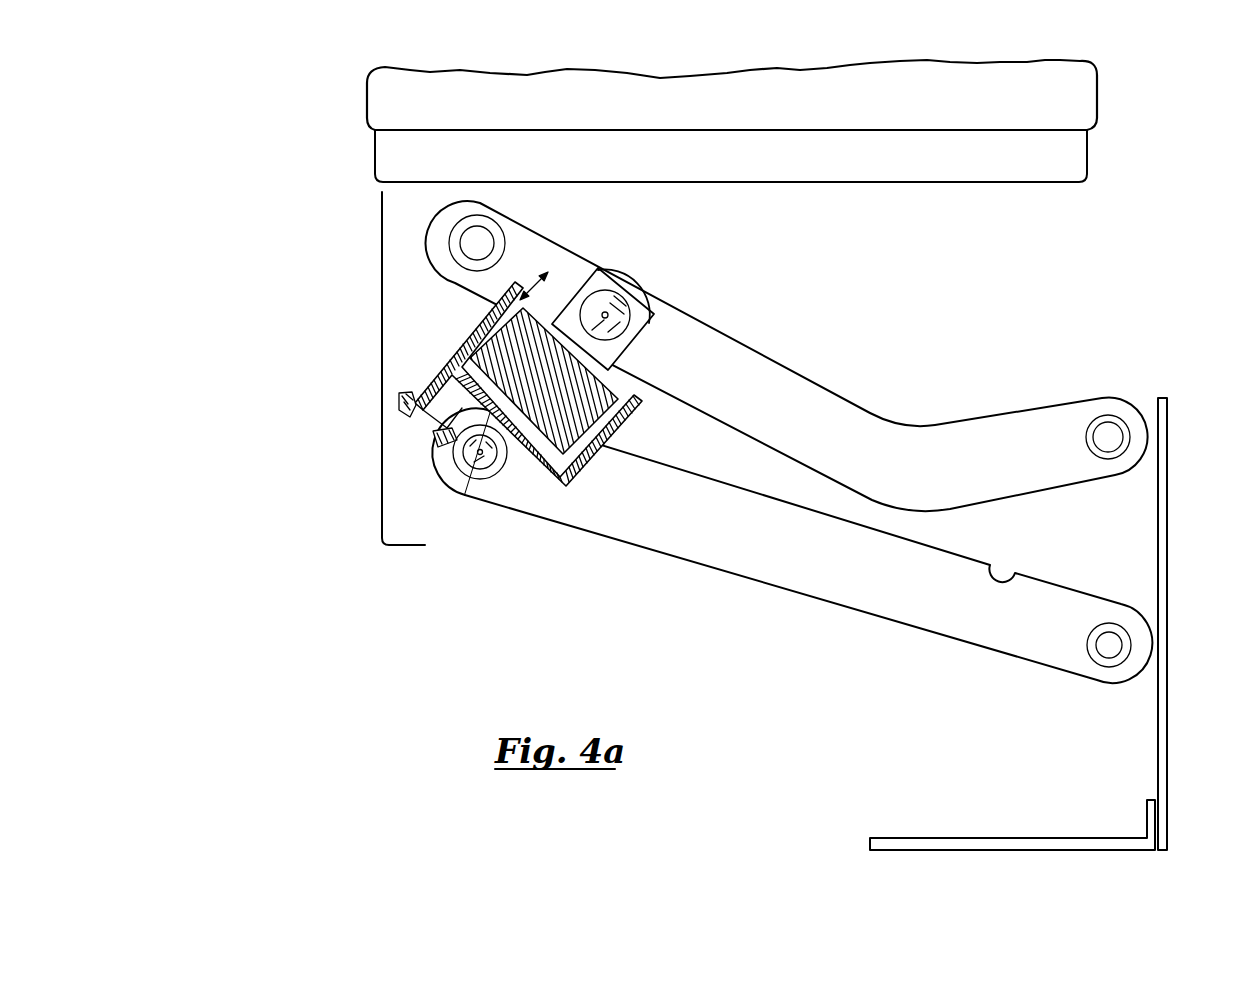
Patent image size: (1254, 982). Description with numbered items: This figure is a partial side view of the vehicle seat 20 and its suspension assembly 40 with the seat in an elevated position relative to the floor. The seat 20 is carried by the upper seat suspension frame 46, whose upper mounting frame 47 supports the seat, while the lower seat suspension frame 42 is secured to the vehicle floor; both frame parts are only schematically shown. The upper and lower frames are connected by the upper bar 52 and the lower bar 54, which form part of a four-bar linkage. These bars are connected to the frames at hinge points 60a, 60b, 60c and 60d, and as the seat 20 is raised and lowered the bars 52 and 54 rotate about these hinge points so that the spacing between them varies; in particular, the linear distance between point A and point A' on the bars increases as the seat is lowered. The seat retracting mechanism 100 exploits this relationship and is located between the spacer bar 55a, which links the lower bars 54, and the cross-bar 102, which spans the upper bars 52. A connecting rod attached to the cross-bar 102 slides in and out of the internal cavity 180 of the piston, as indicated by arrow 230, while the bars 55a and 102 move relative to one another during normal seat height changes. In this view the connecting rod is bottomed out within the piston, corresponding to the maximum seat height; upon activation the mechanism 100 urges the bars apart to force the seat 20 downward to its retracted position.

The vehicle seat 20 is at (690, 121).
The upper mounting frame 47 is at (785, 140).
The seat retracting mechanism 100 is at (370, 341).
The upper seat suspension frame 46 is at (398, 458).
The internal cavity 180 is at (490, 323).
The arrow 230 is at (527, 290).
The cross-bar 102 is at (641, 296).
The point on bar A' is at (666, 284).
The point on bar A is at (516, 508).
The upper bar 52 is at (1003, 417).
The lower bar 54 is at (977, 628).
The spacer bar 55a is at (476, 462).
The hinge point 60a is at (1099, 432).
The hinge point 60b is at (470, 248).
The hinge point 60c is at (495, 510).
The hinge point 60d is at (1090, 647).
The lower seat suspension frame 42 is at (1127, 542).
The suspension assembly 40 is at (968, 800).